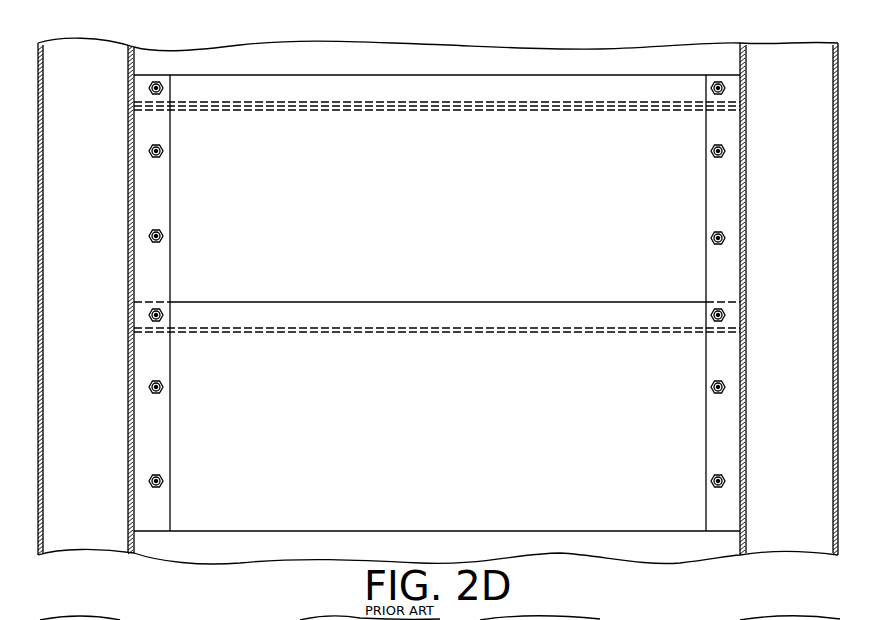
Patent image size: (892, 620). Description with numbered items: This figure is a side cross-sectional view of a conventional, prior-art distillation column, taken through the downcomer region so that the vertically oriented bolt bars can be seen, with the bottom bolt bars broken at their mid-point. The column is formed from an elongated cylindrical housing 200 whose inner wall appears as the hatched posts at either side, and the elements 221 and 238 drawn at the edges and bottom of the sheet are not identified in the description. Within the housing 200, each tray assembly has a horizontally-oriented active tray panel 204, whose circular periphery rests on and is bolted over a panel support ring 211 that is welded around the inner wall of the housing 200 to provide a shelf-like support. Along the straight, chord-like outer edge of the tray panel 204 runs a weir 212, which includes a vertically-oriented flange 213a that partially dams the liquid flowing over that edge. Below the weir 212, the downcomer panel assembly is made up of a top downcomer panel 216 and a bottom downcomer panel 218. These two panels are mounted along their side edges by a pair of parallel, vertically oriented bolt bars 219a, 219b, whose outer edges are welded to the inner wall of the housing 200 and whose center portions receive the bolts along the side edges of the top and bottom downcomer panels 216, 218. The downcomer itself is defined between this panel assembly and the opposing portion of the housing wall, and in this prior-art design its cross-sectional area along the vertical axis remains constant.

The elongated cylindrical housing 200 is at (43, 217).
The vertical rack posts 221 is at (128, 274).
The vertically-oriented flange 213a is at (621, 75).
The active tray panel 204 is at (256, 103).
The panel support ring 211 is at (158, 115).
The bolt bar 219a is at (157, 209).
The bolt bar 219b is at (706, 189).
The weir 212 is at (449, 98).
The top downcomer panel 216 is at (442, 220).
The bottom downcomer panel 218 is at (442, 430).
The adjacent module 238 is at (92, 616).